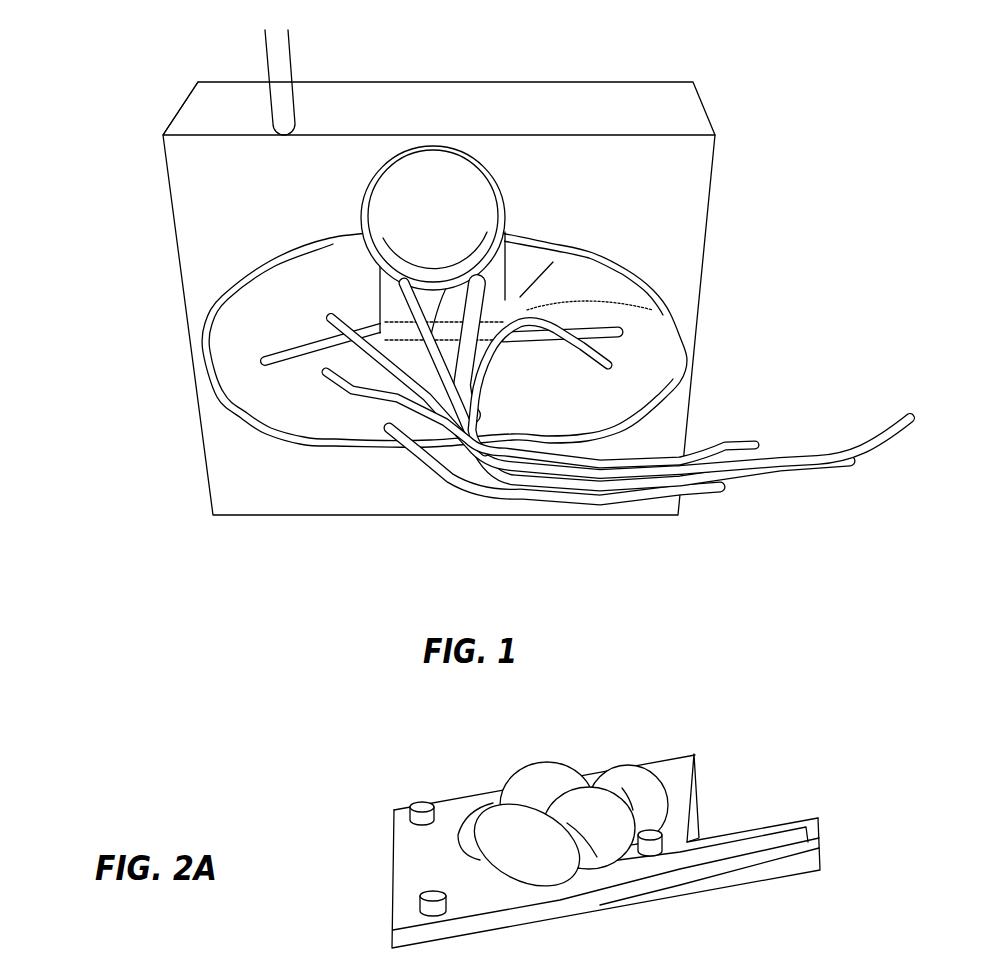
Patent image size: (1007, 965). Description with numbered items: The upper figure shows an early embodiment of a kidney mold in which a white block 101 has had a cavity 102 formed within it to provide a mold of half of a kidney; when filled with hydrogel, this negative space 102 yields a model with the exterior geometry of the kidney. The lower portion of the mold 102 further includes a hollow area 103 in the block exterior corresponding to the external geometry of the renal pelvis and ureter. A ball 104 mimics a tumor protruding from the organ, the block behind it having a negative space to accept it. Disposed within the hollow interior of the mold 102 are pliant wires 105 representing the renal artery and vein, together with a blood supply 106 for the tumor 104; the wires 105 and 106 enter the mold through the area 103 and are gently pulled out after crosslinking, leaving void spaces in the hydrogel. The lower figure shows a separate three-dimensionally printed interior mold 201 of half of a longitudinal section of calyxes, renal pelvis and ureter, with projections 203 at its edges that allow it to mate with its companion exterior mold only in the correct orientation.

In FIG. 1, the white block 101 is at (192, 185).
In FIG. 1, the cavity 102 is at (245, 352).
In FIG. 1, the hollow area 103 is at (482, 477).
In FIG. 1, the ball 104 is at (447, 185).
In FIG. 1, the pliant wires 105 is at (418, 425).
In FIG. 1, the blood supply 106 is at (480, 311).
In FIG. 2A, the interior mold 201 is at (350, 868).
In FIG. 2A, the projections 203 is at (412, 806).